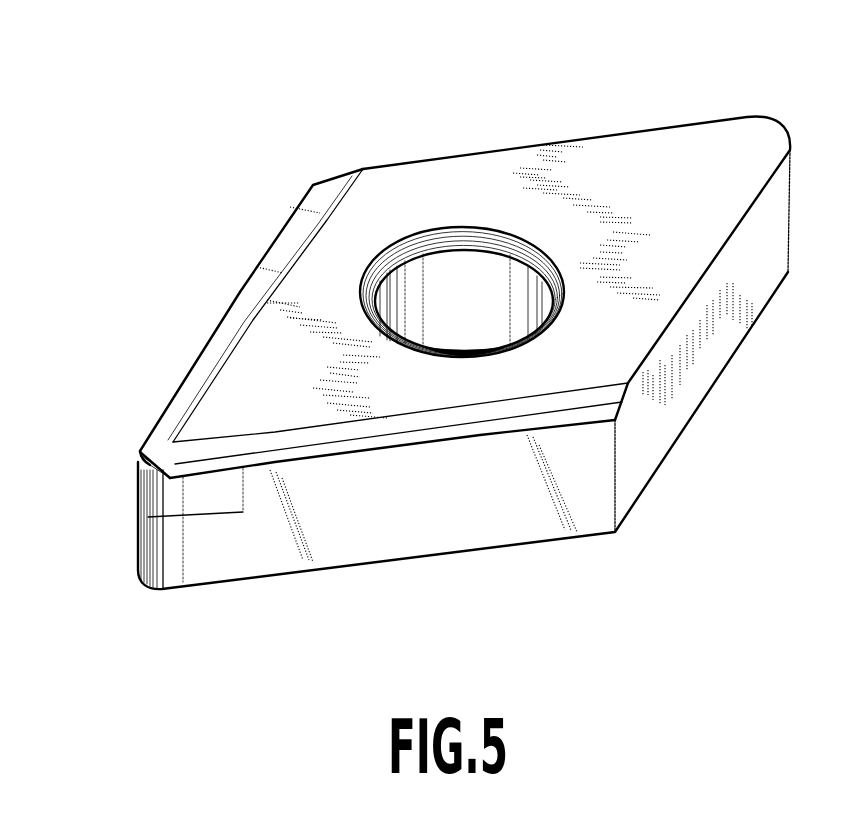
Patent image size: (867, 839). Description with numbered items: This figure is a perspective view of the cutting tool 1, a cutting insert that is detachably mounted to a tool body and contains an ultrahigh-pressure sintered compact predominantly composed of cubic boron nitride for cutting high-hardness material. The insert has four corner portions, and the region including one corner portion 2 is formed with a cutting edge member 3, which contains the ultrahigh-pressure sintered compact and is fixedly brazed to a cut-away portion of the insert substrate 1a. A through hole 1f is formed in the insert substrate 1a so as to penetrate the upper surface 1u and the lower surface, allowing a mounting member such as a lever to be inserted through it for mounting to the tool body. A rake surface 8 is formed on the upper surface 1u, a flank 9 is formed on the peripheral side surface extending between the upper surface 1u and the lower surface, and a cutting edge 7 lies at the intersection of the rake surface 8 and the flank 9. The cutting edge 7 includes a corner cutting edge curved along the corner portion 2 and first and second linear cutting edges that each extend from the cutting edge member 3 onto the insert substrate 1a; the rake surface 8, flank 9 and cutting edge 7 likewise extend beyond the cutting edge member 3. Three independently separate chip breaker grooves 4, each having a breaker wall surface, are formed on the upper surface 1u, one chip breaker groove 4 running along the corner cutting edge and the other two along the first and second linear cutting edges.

The cutting tool 1 is at (610, 192).
The insert substrate 1a is at (257, 353).
The through hole 1f is at (460, 273).
The upper surface 1u is at (197, 424).
The corner portion 2 is at (163, 466).
The cutting edge member 3 is at (176, 430).
The chip breaker groove 4 is at (173, 424).
The cutting edge 7 is at (167, 477).
The rake surface 8 is at (153, 462).
The flank 9 is at (177, 494).